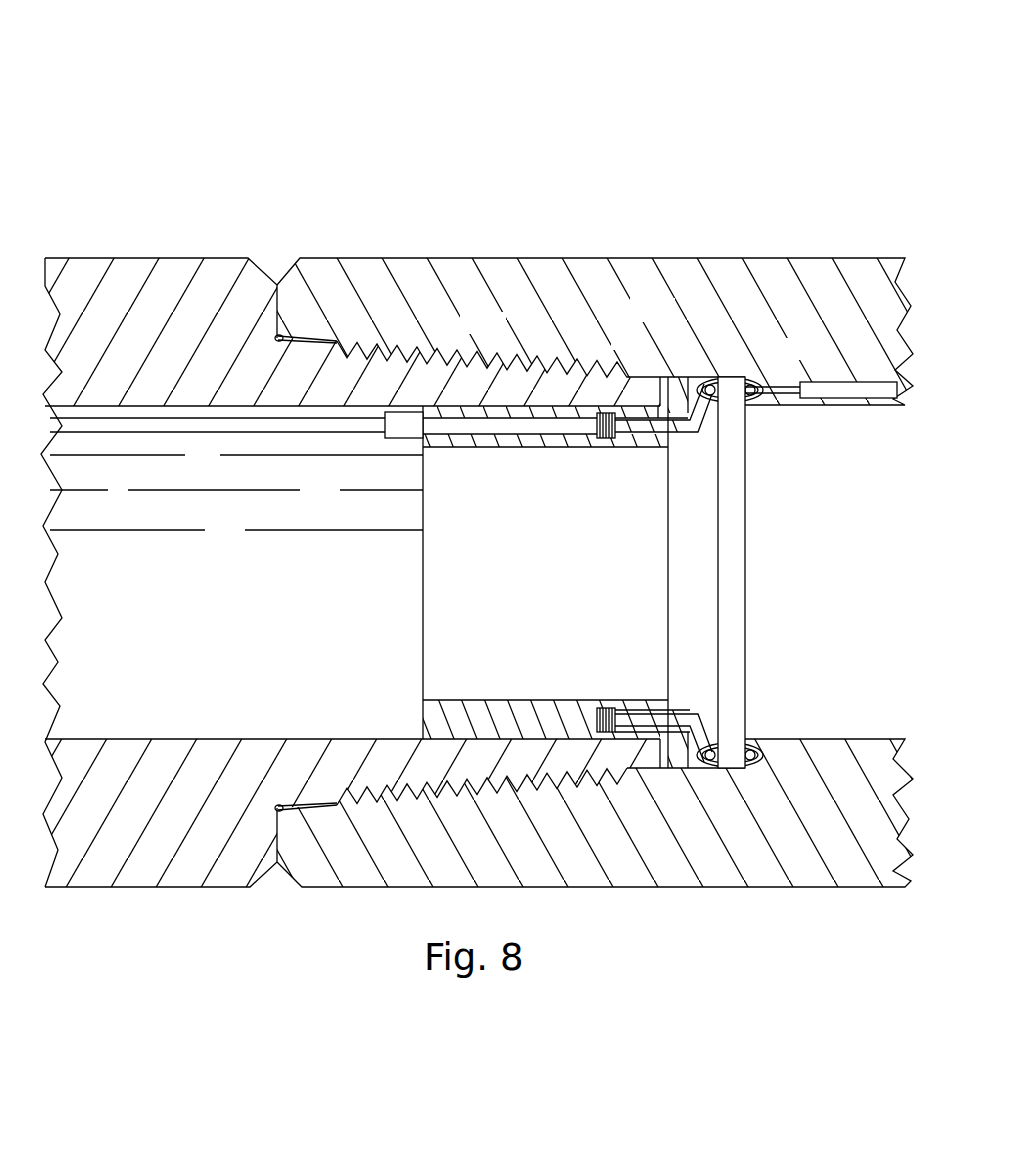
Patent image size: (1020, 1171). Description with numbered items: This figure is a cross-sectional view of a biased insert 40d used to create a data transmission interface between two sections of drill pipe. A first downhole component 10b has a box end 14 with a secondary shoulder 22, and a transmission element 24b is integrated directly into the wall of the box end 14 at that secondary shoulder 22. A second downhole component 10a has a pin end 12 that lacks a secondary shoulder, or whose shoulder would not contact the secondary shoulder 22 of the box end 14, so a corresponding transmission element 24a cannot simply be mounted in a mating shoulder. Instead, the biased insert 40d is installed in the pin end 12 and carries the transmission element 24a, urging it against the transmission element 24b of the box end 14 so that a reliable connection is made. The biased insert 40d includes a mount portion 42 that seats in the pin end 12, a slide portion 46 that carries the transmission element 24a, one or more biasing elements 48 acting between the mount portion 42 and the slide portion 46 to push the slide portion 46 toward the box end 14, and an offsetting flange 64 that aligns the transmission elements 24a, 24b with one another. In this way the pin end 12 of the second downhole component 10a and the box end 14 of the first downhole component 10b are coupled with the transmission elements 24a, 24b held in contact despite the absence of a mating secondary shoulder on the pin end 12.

The second downhole component 10a is at (393, 461).
The first downhole component 10b is at (595, 456).
The pin end 12 is at (140, 242).
The box end 14 is at (723, 244).
The biased insert 40d is at (556, 394).
The offsetting flange 64 is at (690, 377).
The transmission element 24a is at (708, 380).
The transmission element 24b is at (752, 382).
The secondary shoulder 22 is at (738, 406).
The mount portion 42 is at (498, 440).
The biasing element 48 is at (608, 440).
The slide portion 46 is at (655, 442).